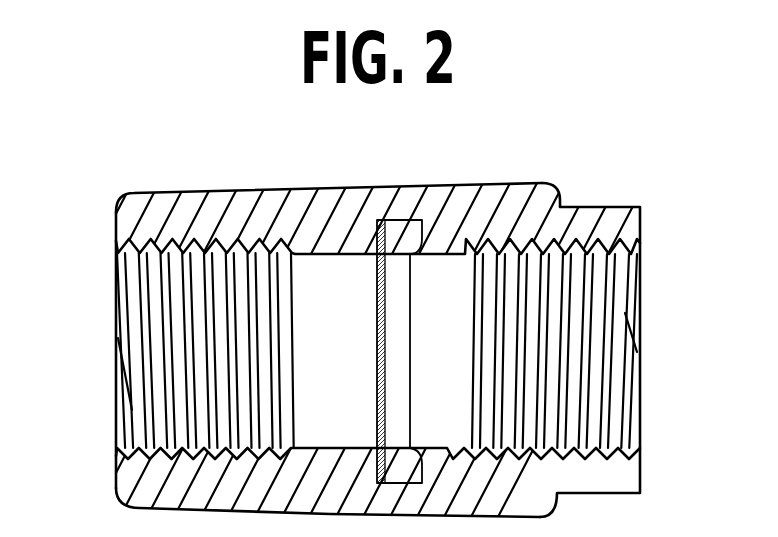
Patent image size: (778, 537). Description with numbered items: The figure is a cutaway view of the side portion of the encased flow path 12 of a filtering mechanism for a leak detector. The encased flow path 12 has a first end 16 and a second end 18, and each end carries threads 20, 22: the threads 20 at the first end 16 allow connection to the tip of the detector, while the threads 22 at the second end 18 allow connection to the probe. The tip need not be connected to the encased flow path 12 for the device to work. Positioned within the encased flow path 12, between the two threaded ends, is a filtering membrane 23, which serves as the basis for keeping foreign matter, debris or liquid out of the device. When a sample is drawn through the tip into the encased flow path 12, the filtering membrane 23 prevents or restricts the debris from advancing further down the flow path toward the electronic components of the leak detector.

The encased flow path 12 is at (180, 192).
The first end 16 is at (641, 243).
The second end 18 is at (115, 277).
The threads 20 is at (628, 298).
The threads 22 is at (130, 343).
The filtering membrane 23 is at (390, 220).